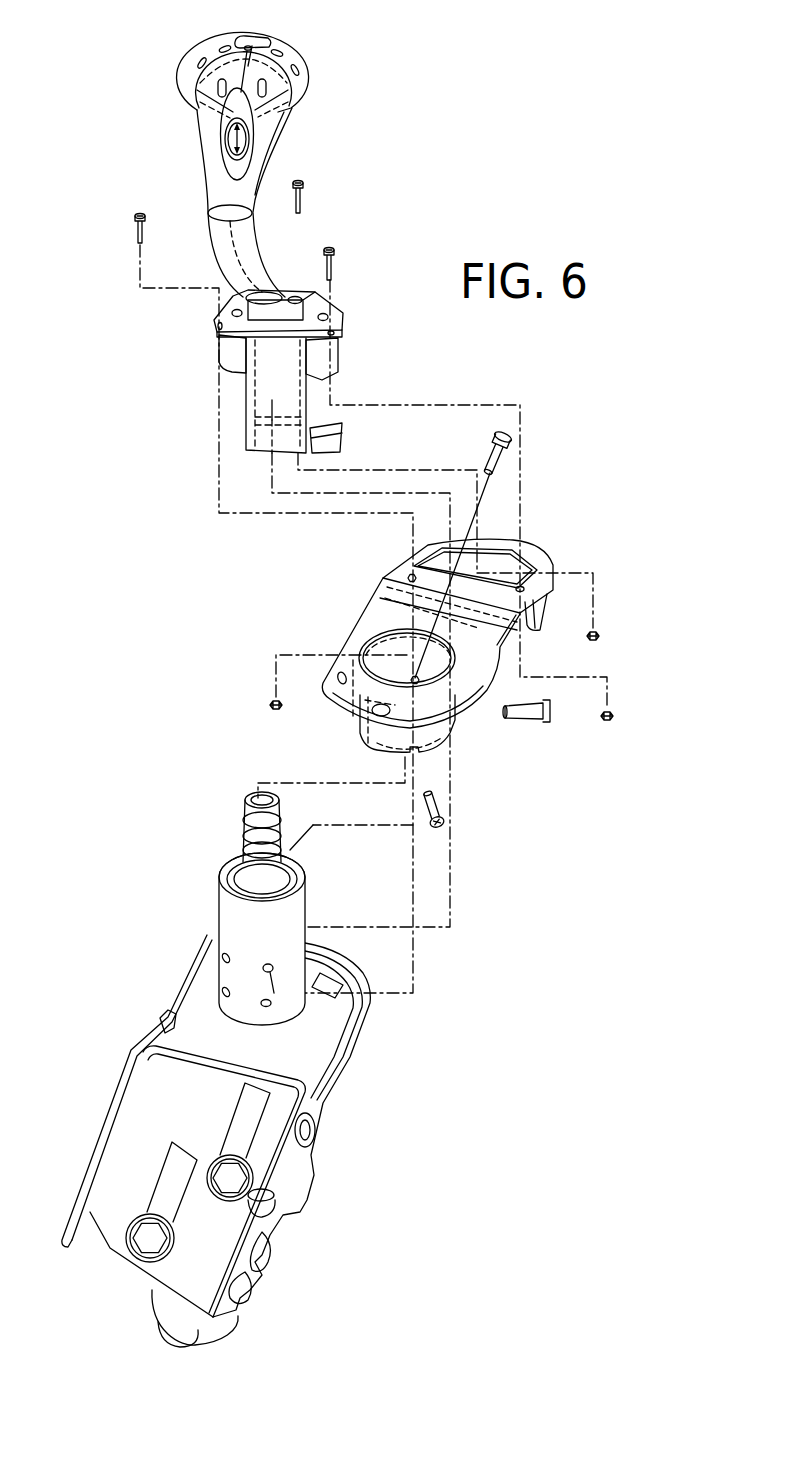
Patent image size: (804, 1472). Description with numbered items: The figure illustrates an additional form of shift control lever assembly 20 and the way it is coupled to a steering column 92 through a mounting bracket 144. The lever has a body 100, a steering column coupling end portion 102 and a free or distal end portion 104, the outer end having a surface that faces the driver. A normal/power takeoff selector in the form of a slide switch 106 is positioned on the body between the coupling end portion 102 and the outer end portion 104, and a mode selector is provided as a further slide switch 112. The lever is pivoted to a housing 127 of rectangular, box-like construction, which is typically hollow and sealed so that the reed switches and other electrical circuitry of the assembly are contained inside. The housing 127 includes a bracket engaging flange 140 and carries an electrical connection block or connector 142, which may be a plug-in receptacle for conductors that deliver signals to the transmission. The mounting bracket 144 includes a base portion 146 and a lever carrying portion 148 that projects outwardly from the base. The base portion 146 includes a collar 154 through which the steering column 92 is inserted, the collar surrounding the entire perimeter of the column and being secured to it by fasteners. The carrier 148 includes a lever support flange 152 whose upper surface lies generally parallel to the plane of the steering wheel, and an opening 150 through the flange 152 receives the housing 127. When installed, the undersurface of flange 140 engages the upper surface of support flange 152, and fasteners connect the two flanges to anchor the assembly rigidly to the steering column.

The shift control lever assembly 20 is at (116, 148).
The steering column 92 is at (230, 920).
The body 100 is at (208, 238).
The steering column coupling end portion 102 is at (283, 287).
The free or distal end portion 104 is at (313, 98).
The slide switch 106 is at (252, 142).
The slide switch 112 is at (250, 35).
The housing 127 is at (248, 446).
The bracket engaging flange 140 is at (215, 330).
The electrical connection block or connector 142 is at (330, 425).
The mounting bracket 144 is at (353, 637).
The base portion 146 is at (443, 742).
The lever carrying or supporting portion 148 is at (555, 574).
The opening 150 is at (500, 563).
The flange 152 is at (437, 578).
The collar 154 is at (380, 735).